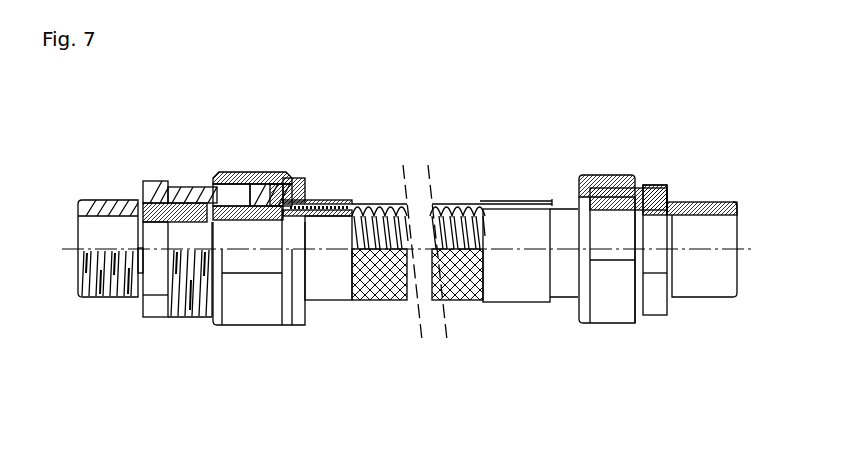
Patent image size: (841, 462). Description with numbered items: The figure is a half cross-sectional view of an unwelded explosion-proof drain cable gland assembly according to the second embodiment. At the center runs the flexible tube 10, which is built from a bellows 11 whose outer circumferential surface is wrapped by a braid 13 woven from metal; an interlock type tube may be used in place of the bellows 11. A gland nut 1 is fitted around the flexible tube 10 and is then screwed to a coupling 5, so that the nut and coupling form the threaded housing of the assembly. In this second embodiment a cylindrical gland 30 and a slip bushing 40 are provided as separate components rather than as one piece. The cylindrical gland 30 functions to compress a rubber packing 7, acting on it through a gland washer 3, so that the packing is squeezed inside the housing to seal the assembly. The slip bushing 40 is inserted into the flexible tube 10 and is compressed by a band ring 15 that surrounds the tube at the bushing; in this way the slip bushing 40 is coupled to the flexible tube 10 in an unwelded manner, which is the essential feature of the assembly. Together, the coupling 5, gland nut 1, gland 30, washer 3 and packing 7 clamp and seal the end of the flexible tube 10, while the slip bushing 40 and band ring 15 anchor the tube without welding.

The gland nut 1 is at (269, 176).
The gland washer 3 is at (205, 236).
The coupling 5 is at (105, 203).
The rubber packing 7 is at (162, 204).
The flexible tube 10 is at (457, 251).
The bellows 11 is at (368, 205).
The braid 13 is at (387, 202).
The band ring 15 is at (313, 200).
The cylindrical gland 30 is at (247, 190).
The slip bushing 40 is at (296, 177).